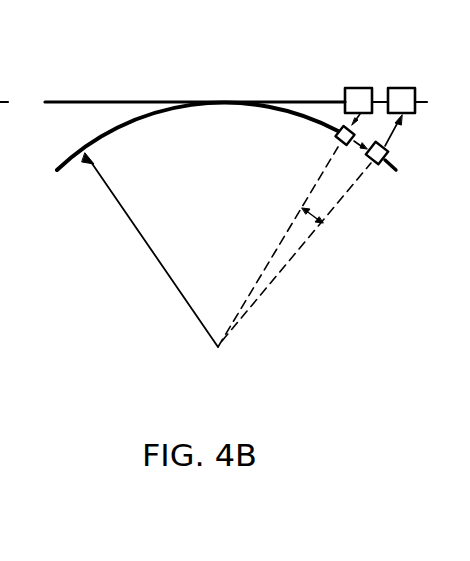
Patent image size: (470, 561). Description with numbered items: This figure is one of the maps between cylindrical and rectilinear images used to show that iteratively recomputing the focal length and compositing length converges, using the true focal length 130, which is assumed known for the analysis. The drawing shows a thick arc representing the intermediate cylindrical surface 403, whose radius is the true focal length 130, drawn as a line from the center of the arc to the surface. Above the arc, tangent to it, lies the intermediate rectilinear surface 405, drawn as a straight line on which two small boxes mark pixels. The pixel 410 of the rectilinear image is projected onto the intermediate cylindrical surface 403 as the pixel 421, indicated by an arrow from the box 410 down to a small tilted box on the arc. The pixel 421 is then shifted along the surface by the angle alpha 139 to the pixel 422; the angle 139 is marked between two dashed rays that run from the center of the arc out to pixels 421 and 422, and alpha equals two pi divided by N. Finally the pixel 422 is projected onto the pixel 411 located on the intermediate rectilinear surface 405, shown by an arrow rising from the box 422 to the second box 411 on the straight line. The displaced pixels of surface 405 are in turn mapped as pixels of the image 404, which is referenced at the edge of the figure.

The intermediate rectilinear surface 405 is at (135, 100).
The intermediate cylindrical surface 403 is at (62, 166).
The true focal length 130 is at (170, 280).
The pixel 410 is at (360, 87).
The pixel 411 is at (408, 87).
The pixel 421 is at (335, 135).
The pixel 422 is at (378, 172).
The angle alpha 139 is at (308, 224).
The image 404 is at (459, 193).